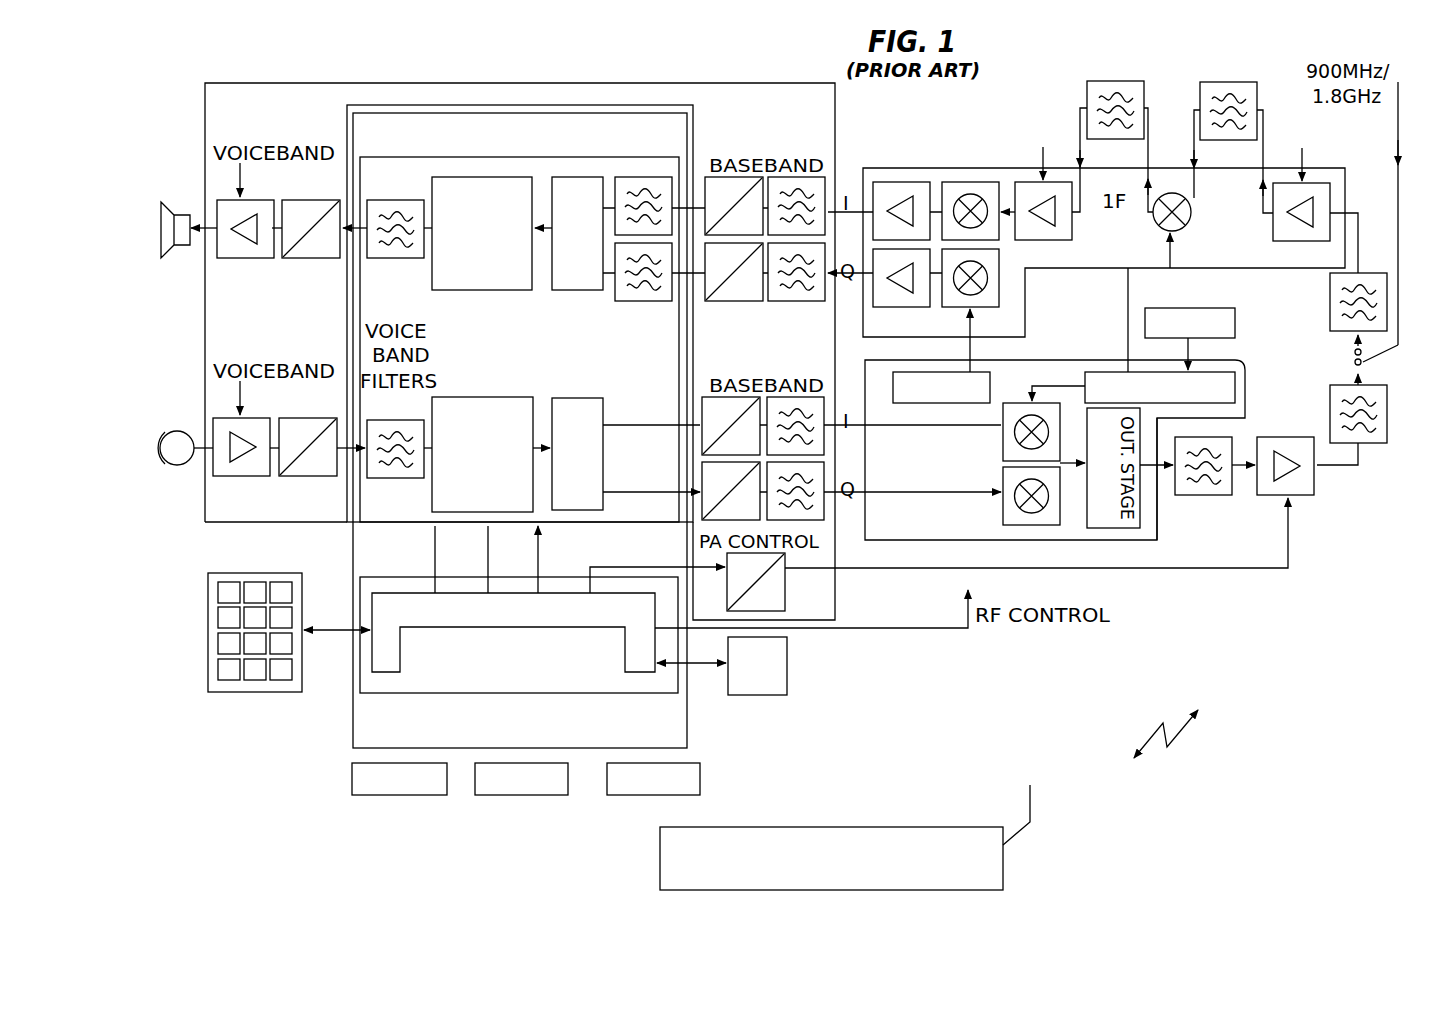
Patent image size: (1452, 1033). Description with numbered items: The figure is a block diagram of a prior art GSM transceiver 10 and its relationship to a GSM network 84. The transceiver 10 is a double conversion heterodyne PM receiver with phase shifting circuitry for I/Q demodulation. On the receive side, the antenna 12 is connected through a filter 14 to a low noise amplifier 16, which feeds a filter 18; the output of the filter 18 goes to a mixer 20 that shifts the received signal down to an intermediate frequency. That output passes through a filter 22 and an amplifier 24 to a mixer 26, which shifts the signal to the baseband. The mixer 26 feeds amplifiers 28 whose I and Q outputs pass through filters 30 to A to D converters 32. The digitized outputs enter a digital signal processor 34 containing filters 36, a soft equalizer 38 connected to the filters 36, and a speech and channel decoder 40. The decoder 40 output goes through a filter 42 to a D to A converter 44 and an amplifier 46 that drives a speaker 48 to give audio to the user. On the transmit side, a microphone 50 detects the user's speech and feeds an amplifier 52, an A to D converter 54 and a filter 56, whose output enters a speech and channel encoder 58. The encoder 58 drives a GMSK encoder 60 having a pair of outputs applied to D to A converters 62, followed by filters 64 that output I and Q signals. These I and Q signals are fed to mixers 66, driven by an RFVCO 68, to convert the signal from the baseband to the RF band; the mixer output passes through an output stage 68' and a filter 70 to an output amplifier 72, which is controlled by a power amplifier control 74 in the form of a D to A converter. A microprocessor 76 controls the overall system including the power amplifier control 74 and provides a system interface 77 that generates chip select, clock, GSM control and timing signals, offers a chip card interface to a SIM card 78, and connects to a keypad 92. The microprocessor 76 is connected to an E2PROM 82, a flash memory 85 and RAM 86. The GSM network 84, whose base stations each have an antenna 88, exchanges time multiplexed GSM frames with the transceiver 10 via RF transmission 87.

The GSM transceiver 10 is at (567, 62).
The antenna 12 is at (1398, 222).
The filter 14 is at (1384, 346).
The low noise amplifier 16 is at (1322, 183).
The filter 18 is at (1200, 95).
The mixer 20 is at (1172, 194).
The filter 22 is at (1087, 92).
The amplifier 24 is at (1040, 182).
The mixer 26 is at (960, 182).
The amplifiers 28 is at (898, 182).
The filters 30 is at (860, 180).
The A to D converters 32 is at (705, 178).
The digital signal processor 34 is at (460, 105).
The filters 36 is at (644, 303).
The soft equalizer 38 is at (572, 292).
The speech and channel decoder 40 is at (475, 292).
The filter 42 is at (393, 200).
The D to A converter 44 is at (312, 258).
The amplifier 46 is at (218, 258).
The speaker 48 is at (172, 212).
The microphone 50 is at (176, 431).
The amplifier 52 is at (214, 478).
The A to D converter 54 is at (305, 478).
The filter 56 is at (400, 480).
The speech and channel encoder 58 is at (498, 397).
The GMSK encoder 60 is at (580, 398).
The D to A converters 62 is at (702, 408).
The filters 64 is at (826, 522).
The mixers 66 is at (1003, 500).
The RFVCO 68 is at (1097, 335).
The output stage 68' is at (1182, 486).
The filter 70 is at (1225, 497).
The output amplifier 72 is at (1318, 478).
The power amplifier control 74 is at (788, 578).
The microprocessor 76 is at (353, 712).
The system interface 77 is at (580, 632).
The SIM card 78 is at (788, 692).
The E2PROM 82 is at (440, 797).
The GSM network 84 is at (660, 862).
The flash memory 85 is at (516, 797).
The RAM 86 is at (615, 797).
The RF transmission 87 is at (1152, 742).
The antenna 88 is at (1030, 822).
The keypad 92 is at (240, 693).